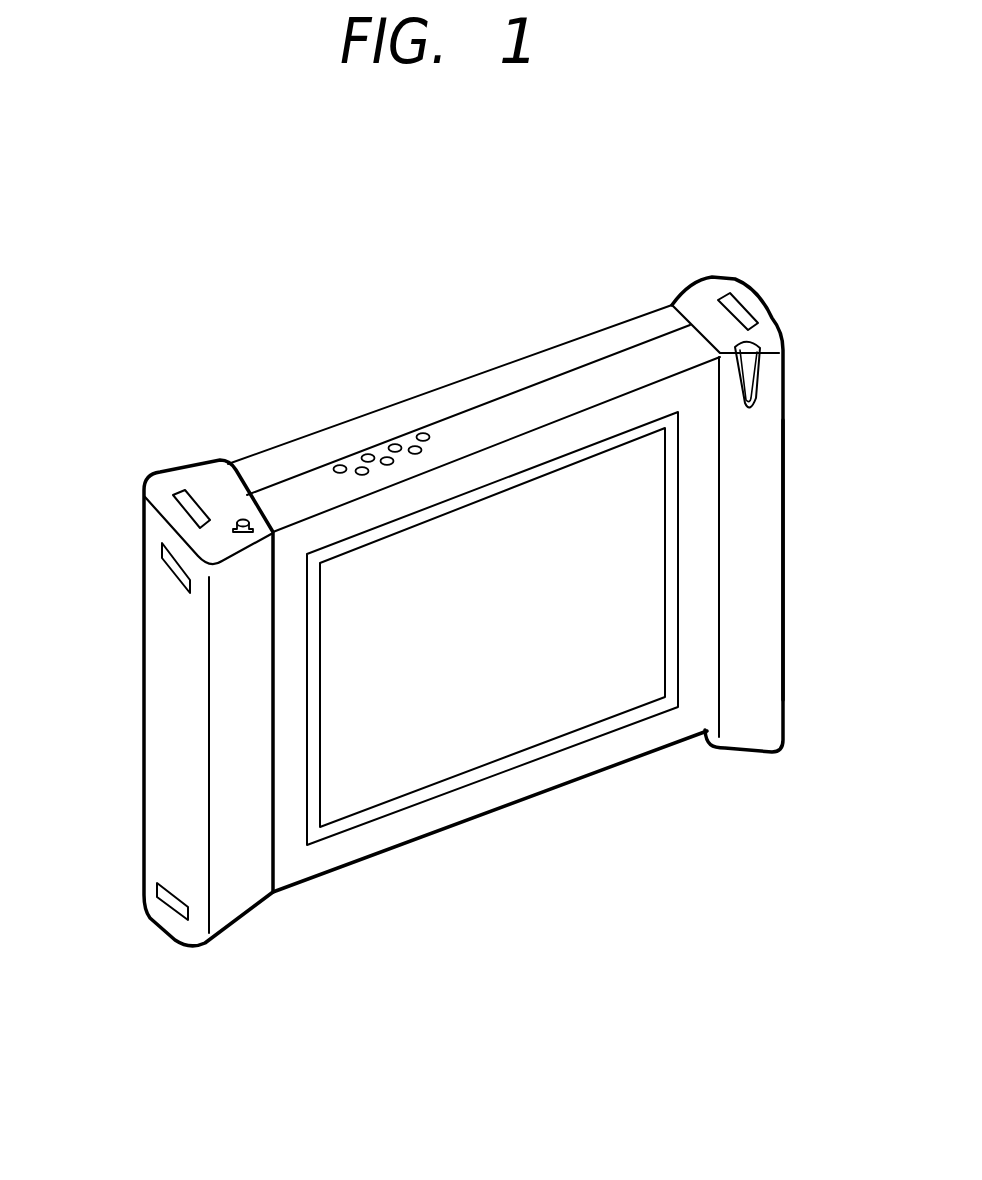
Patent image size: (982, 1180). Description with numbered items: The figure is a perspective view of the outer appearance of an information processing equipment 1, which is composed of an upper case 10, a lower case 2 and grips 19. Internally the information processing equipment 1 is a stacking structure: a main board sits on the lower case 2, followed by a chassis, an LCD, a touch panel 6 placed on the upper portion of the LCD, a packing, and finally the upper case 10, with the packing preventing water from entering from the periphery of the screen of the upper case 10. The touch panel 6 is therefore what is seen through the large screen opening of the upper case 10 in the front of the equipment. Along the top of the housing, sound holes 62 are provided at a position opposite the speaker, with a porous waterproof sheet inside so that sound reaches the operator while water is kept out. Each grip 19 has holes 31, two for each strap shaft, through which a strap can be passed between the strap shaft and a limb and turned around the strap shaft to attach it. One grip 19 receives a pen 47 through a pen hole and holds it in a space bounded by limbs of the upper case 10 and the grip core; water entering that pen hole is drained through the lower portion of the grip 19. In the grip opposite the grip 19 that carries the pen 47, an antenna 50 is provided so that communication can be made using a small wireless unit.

The information processing equipment 1 is at (603, 278).
The lower case 2 is at (278, 463).
The touch panel 6 is at (510, 698).
The upper case 10 is at (687, 348).
The grip 19 is at (770, 563).
The hole 31 is at (166, 902).
The pen 47 is at (748, 350).
The antenna 50 is at (237, 530).
The sound holes 62 is at (375, 448).